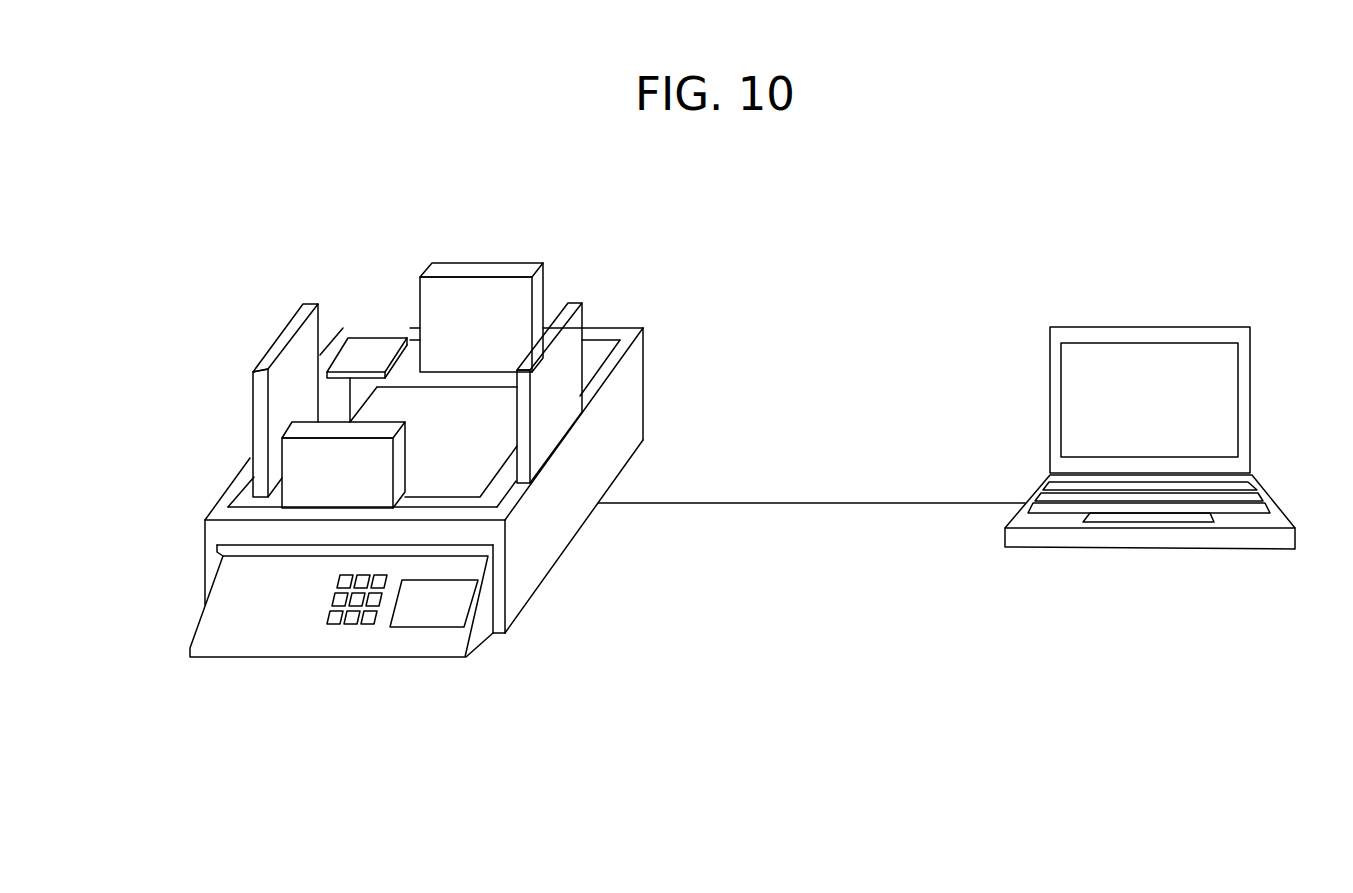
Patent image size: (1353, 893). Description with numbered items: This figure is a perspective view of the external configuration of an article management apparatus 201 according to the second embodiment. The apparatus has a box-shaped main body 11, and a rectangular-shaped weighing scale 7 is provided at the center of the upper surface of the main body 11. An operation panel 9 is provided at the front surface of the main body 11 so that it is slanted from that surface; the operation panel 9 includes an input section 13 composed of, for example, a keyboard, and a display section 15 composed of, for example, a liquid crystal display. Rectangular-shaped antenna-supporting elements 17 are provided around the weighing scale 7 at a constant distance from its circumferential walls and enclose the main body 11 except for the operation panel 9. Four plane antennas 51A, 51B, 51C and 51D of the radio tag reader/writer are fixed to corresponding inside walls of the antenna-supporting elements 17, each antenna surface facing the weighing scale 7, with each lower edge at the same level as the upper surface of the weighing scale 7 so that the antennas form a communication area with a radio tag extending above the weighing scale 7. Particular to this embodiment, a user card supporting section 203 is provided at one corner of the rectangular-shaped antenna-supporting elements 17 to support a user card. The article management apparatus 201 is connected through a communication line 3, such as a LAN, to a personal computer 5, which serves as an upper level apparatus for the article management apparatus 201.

The article management apparatus 201 is at (226, 476).
The antenna-supporting elements 17 is at (632, 399).
The weighing scale 7 is at (397, 402).
The main body 11 is at (497, 490).
The user card supporting section 203 is at (360, 350).
The plane antenna 51A is at (377, 467).
The plane antenna 51B is at (565, 355).
The plane antenna 51C is at (488, 268).
The plane antenna 51D is at (278, 350).
The operation panel 9 is at (287, 643).
The input section 13 is at (348, 627).
The display section 15 is at (430, 630).
The communication line 3 is at (808, 502).
The personal computer 5 is at (1252, 397).